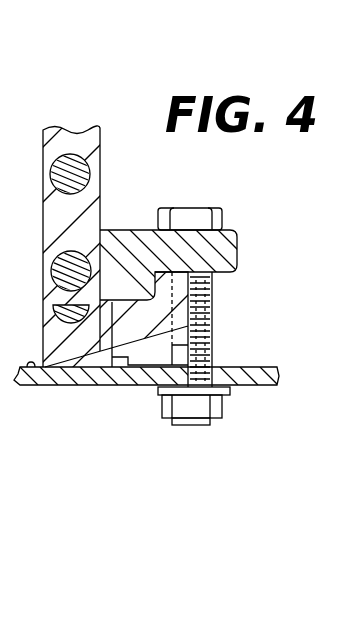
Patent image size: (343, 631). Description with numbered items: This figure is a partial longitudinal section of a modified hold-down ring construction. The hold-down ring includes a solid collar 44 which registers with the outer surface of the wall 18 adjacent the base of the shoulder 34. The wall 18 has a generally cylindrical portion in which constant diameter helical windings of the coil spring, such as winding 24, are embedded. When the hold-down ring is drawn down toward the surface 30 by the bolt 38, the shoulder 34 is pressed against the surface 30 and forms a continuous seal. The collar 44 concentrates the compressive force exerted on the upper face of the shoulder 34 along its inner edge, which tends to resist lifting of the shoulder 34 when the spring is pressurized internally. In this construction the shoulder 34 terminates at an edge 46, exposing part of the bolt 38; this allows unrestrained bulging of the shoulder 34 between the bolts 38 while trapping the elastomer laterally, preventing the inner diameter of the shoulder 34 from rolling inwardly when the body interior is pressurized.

The wall 18 is at (89, 225).
The helical winding 24 is at (72, 157).
The surface 30 is at (30, 374).
The shoulder 34 is at (152, 342).
The bolt 38 is at (213, 333).
The solid collar 44 is at (117, 293).
The edge 46 is at (213, 299).